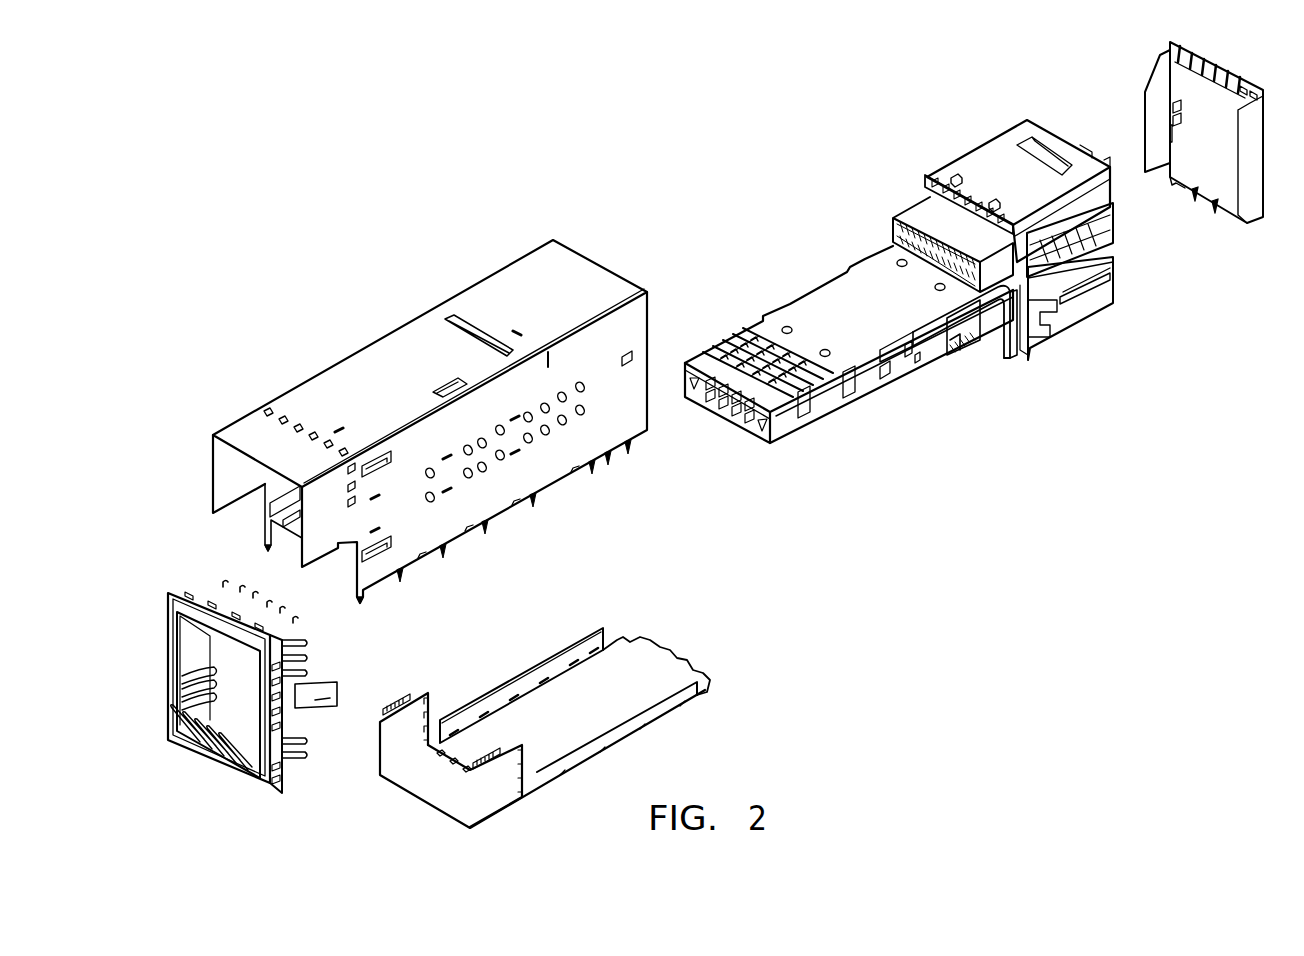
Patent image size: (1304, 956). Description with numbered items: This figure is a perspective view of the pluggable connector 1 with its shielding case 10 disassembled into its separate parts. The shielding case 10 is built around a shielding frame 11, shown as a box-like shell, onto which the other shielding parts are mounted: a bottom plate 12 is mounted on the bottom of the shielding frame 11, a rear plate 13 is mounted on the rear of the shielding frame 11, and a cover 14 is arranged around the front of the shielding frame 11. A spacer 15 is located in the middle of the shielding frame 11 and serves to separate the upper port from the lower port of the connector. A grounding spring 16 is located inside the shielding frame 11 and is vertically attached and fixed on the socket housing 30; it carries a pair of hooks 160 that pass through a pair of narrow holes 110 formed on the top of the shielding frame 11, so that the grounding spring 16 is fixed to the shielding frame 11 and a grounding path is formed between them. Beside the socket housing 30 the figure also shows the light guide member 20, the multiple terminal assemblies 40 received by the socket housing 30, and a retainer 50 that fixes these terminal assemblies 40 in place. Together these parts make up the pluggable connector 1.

The pluggable connector 1 is at (654, 140).
The shielding case 10 is at (405, 330).
The shielding frame 11 is at (338, 392).
The narrow holes 110 is at (483, 312).
The bottom plate 12 is at (657, 673).
The rear plate 13 is at (1190, 110).
The cover 14 is at (232, 598).
The spacer 15 is at (828, 310).
The grounding spring 16 is at (935, 183).
The hooks 160 is at (953, 180).
The light guide member 20 is at (942, 330).
The socket housing 30 is at (1003, 134).
The terminal assemblies 40 is at (1100, 243).
The retainer 50 is at (1092, 320).